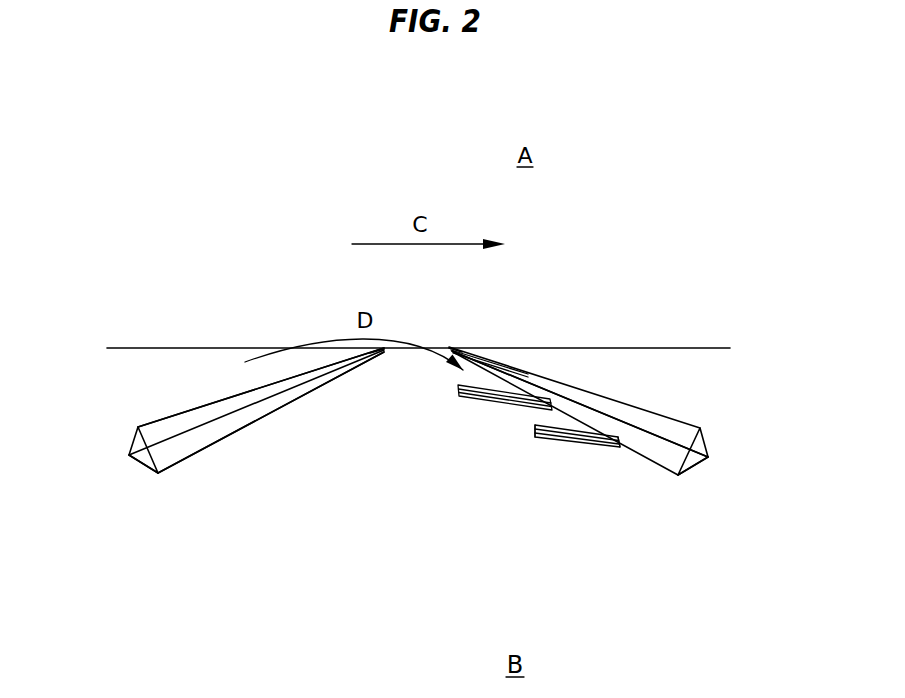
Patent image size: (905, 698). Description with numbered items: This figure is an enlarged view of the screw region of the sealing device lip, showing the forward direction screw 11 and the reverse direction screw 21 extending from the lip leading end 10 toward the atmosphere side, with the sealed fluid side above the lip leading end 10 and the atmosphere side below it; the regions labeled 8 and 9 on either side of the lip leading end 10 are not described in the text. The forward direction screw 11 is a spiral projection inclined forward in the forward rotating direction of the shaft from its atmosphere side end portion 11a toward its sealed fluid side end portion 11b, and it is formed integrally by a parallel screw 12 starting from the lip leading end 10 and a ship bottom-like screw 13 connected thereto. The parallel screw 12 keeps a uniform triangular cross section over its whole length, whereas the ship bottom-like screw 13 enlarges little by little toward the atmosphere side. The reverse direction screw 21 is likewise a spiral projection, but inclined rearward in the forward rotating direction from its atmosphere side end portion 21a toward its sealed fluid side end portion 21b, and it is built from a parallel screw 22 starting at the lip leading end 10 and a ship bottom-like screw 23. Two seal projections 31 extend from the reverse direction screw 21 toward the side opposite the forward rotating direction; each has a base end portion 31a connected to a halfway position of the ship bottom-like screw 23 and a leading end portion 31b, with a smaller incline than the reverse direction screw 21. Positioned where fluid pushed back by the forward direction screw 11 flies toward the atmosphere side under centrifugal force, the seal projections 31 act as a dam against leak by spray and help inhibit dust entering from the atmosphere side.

The first layer 8 is at (148, 327).
The second layer 9 is at (150, 377).
The lip leading end 10 is at (573, 350).
The forward direction screw 11 is at (246, 474).
The atmosphere side end portion 11a is at (140, 467).
The sealed fluid side end portion 11b is at (385, 355).
The parallel screw 12 is at (352, 370).
The ship bottom-like screw 13 is at (260, 412).
The reverse direction screw 21 is at (614, 424).
The atmosphere side end portion 21a is at (697, 465).
The sealed fluid side end portion 21b is at (460, 347).
The parallel screw 22 is at (495, 352).
The ship bottom-like screw 23 is at (610, 405).
The seal projection 31 is at (482, 398).
The base end portion 31a is at (618, 447).
The leading end portion 31b is at (535, 437).